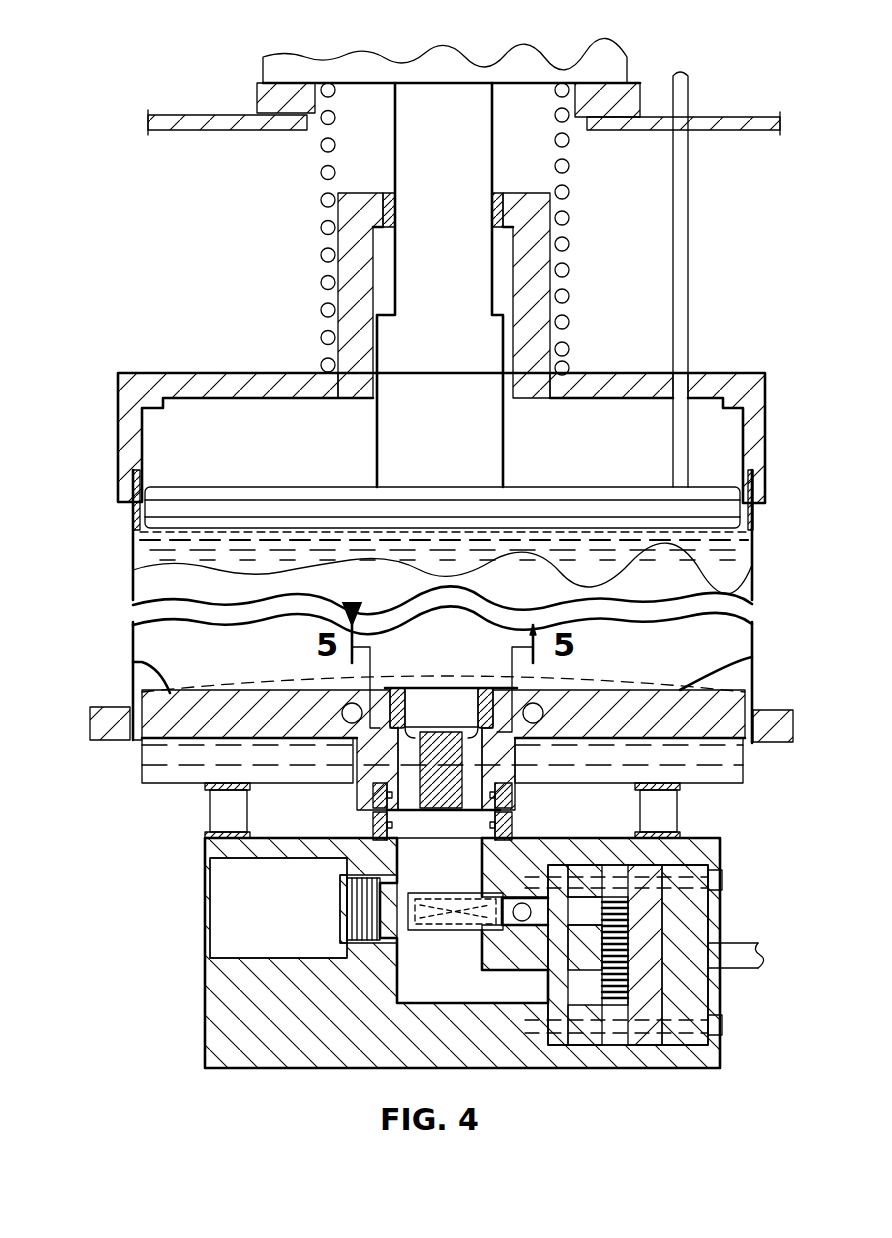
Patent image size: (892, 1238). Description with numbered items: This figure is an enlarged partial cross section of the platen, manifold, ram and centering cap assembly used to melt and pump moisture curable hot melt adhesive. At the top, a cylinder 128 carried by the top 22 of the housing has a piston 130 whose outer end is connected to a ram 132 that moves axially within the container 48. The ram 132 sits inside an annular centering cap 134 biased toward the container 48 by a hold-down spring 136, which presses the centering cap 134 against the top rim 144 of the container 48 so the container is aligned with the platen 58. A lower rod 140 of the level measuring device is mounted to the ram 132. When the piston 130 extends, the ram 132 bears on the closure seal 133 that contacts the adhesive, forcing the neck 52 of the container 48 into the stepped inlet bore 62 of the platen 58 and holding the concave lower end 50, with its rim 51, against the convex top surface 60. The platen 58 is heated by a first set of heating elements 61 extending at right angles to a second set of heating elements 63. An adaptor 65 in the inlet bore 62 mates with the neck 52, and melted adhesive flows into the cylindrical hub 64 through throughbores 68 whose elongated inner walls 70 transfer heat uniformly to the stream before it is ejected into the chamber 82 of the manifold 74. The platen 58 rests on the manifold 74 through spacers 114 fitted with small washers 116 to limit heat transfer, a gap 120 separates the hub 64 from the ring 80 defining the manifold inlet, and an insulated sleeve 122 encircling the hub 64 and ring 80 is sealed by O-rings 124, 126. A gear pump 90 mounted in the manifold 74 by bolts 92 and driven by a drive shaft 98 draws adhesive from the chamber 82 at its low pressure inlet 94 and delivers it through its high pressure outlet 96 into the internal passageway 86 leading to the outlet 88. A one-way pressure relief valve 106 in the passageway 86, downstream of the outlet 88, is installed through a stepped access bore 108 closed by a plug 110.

The cylinder 128 is at (631, 57).
The top 22 is at (748, 124).
The piston 130 is at (464, 176).
The hold-down spring 136 is at (570, 194).
The lower rod 140 is at (688, 214).
The annular centering cap 134 is at (228, 373).
The top rim 144 is at (142, 480).
The ram 132 is at (305, 487).
The closure seal 133 is at (355, 528).
The container 48 is at (755, 585).
The convex top surface 60 is at (218, 688).
The concave lower end 50 is at (247, 688).
The first set of heating elements 61 is at (347, 703).
The adaptor 65 is at (397, 688).
The neck 52 is at (412, 690).
The stepped inlet bore 62 is at (490, 695).
The inner wall 70 is at (410, 728).
The rim 51 is at (760, 705).
The platen 58 is at (160, 730).
The throughbores 68 is at (480, 760).
The second set of heating elements 63 is at (200, 790).
The spacers 114 is at (228, 820).
The washers 116 is at (207, 835).
The cylindrical hub 64 is at (372, 798).
The gap 120 is at (372, 818).
The O-ring 124 is at (512, 800).
The O-ring 126 is at (512, 828).
The insulated sleeve 122 is at (482, 820).
The ring 80 is at (482, 825).
The manifold 74 is at (232, 1050).
The chamber 82 is at (412, 1000).
The stepped access bore 108 is at (230, 956).
The plug 110 is at (340, 915).
The pressure relief valve 106 is at (415, 933).
The outlet 88 is at (520, 925).
The internal passageway 86 is at (515, 987).
The gear pump 90 is at (690, 920).
The low pressure inlet 94 is at (582, 985).
The bolts 92 is at (722, 878).
The high pressure outlet 96 is at (585, 900).
The drive shaft 98 is at (760, 955).